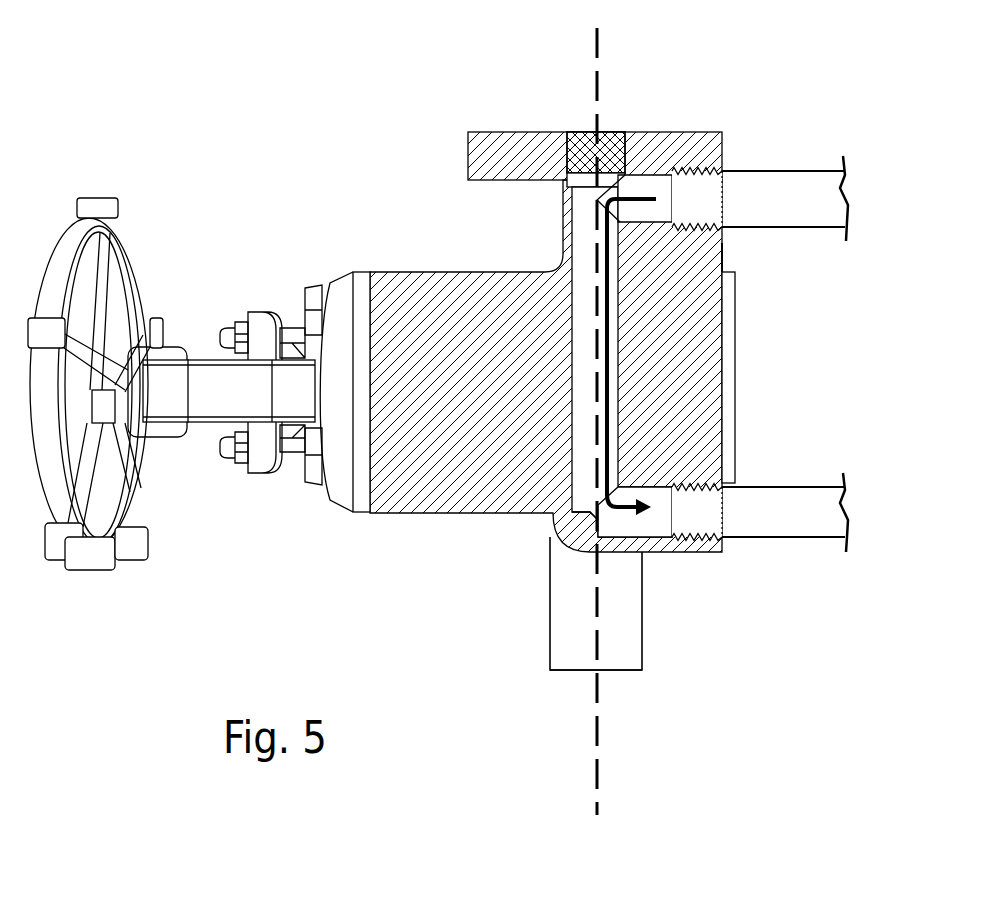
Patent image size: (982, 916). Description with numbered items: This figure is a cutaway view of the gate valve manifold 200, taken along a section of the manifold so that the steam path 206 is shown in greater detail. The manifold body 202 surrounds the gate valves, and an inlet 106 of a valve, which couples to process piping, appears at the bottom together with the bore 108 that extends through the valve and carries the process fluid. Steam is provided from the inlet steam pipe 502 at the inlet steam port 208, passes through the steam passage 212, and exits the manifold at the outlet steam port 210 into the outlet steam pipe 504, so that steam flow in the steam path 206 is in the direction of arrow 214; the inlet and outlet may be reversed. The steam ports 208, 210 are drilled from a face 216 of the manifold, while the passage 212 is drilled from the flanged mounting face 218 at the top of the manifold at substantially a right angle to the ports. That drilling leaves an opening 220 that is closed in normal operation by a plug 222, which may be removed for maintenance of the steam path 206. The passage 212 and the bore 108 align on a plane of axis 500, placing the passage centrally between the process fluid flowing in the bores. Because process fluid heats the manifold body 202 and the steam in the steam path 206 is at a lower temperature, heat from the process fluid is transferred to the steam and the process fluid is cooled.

The gate valve manifold 200 is at (276, 85).
The manifold body 202 is at (432, 268).
The steam path 206 is at (647, 178).
The steam port 208 is at (648, 223).
The steam port 210 is at (657, 485).
The steam passage 212 is at (588, 251).
The arrow 214 is at (600, 466).
The face 216 is at (722, 258).
The flanged mounting face 218 is at (682, 130).
The opening 220 is at (552, 182).
The plug 222 is at (614, 124).
The inlet steam pipe 502 is at (792, 170).
The outlet steam pipe 504 is at (800, 537).
The inlet 106 is at (642, 657).
The bore 108 is at (571, 672).
The axis 500 is at (620, 421).